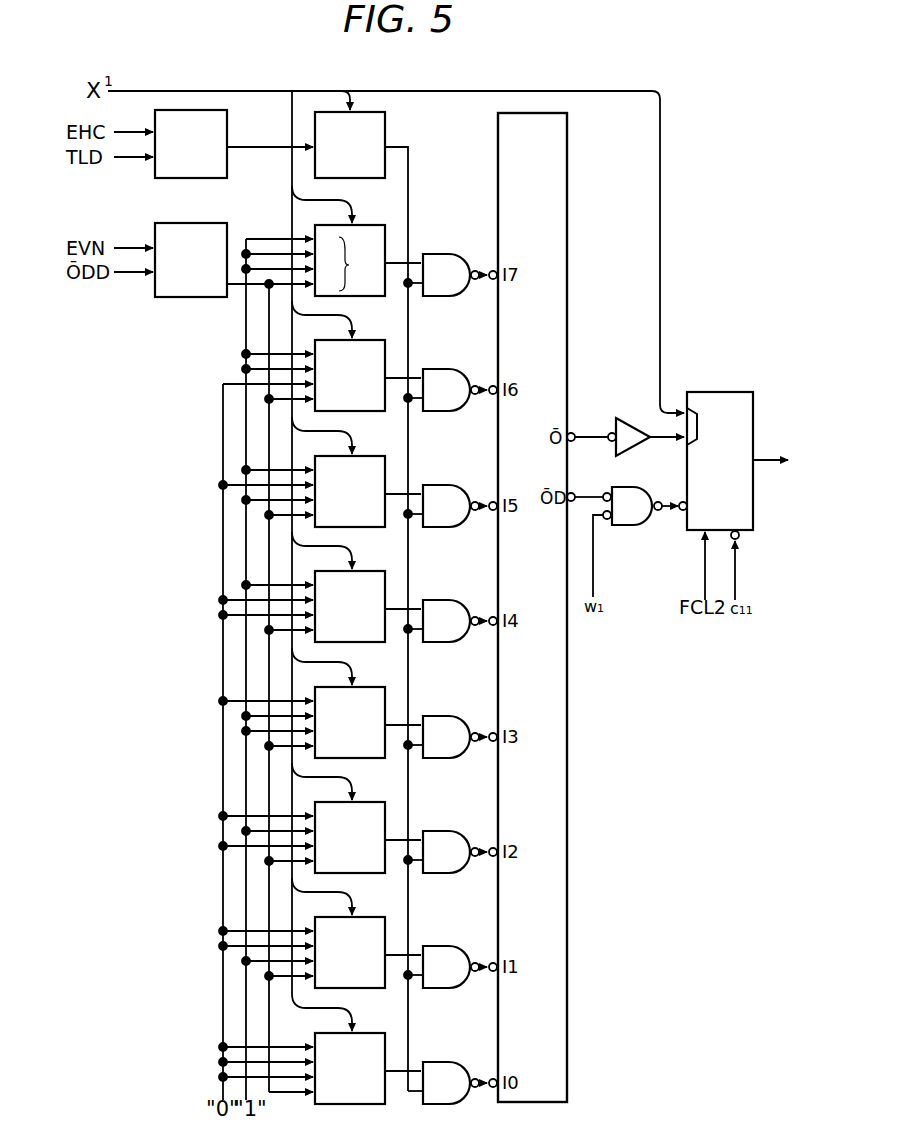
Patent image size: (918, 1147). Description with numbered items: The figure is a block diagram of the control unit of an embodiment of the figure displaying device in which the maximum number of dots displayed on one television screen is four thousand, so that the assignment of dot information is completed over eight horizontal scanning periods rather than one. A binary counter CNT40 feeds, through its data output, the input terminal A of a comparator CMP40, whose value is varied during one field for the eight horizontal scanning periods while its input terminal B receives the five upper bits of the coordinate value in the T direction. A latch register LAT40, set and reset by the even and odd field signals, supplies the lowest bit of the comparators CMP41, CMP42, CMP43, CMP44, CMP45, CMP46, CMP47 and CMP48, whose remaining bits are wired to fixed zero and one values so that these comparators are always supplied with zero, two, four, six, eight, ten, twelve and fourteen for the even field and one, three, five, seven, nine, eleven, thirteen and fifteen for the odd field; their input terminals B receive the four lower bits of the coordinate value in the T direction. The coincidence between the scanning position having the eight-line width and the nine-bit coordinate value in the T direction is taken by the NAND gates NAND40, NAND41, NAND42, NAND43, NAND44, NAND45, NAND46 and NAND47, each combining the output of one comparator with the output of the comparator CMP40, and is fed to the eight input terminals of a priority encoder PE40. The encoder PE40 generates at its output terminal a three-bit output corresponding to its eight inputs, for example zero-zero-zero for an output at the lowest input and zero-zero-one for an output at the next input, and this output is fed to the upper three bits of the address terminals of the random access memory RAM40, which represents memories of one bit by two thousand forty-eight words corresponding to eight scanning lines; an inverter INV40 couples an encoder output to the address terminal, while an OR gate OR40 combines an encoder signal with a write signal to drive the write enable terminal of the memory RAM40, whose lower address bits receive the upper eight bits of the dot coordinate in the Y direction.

The binary counter CNT40 is at (224, 178).
The latch register LAT40 is at (192, 297).
The comparator CMP40 is at (385, 166).
The comparator CMP41 is at (385, 283).
The comparator CMP42 is at (385, 398).
The comparator CMP43 is at (385, 514).
The comparator CMP44 is at (385, 629).
The comparator CMP45 is at (385, 745).
The comparator CMP46 is at (385, 860).
The comparator CMP47 is at (385, 975).
The comparator CMP48 is at (350, 1104).
The NAND gate NAND40 is at (447, 296).
The NAND gate NAND41 is at (447, 411).
The NAND gate NAND42 is at (447, 527).
The NAND gate NAND43 is at (447, 642).
The NAND gate NAND44 is at (447, 758).
The NAND gate NAND45 is at (447, 873).
The NAND gate NAND46 is at (447, 988).
The NAND gate NAND47 is at (447, 1104).
The priority encoder PE40 is at (567, 235).
The inverter INV40 is at (630, 418).
The OR gate OR40 is at (632, 525).
The random access memory RAM40 is at (716, 392).